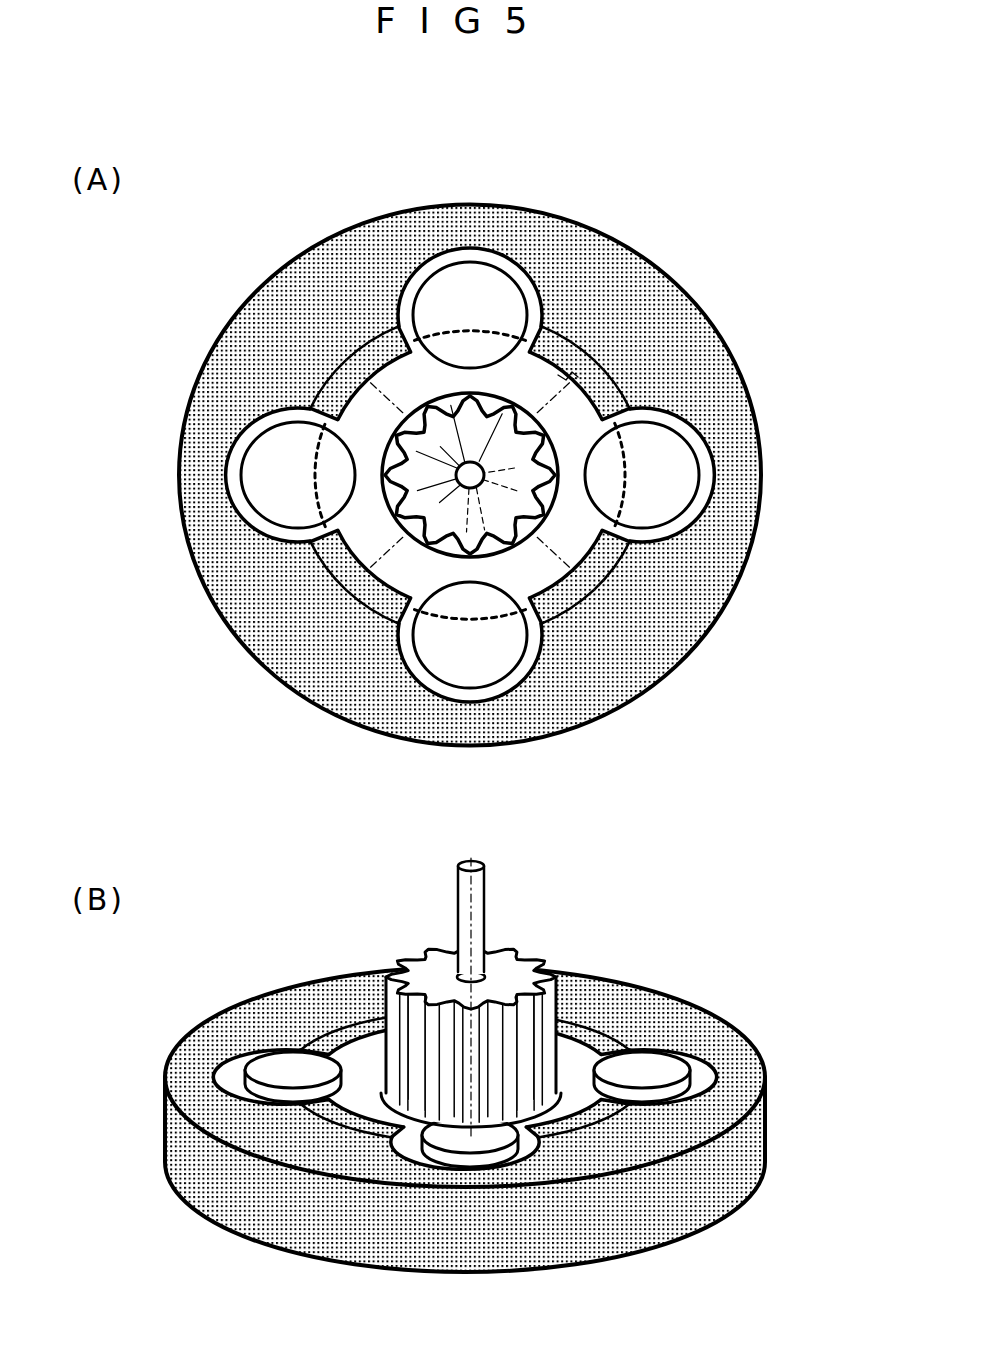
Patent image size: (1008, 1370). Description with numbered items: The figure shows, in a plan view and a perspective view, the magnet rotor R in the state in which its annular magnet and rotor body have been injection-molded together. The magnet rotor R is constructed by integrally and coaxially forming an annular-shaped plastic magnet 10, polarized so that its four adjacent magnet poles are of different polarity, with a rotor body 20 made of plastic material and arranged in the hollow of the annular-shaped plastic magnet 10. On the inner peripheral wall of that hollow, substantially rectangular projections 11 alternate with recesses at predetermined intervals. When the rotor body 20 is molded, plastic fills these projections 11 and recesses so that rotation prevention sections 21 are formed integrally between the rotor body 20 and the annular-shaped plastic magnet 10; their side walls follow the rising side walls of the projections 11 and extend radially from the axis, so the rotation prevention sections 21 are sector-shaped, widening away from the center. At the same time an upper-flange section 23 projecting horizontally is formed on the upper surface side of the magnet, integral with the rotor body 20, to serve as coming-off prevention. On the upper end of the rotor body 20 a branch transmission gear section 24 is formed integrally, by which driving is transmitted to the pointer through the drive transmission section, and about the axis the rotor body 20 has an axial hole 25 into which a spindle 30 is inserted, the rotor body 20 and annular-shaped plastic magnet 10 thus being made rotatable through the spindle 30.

The annular-shaped plastic magnet 10 is at (330, 247).
The projections 11 is at (580, 365).
The rotor body 20 is at (597, 400).
The rotation prevention sections 21 is at (300, 427).
The upper-flange section 23 is at (474, 312).
The branch transmission gear section 24 is at (565, 492).
The axial hole 25 is at (466, 492).
The spindle 30 is at (467, 912).
The magnet rotor R is at (456, 734).